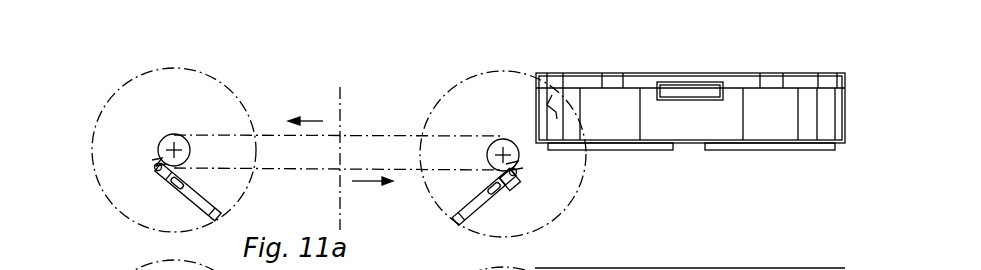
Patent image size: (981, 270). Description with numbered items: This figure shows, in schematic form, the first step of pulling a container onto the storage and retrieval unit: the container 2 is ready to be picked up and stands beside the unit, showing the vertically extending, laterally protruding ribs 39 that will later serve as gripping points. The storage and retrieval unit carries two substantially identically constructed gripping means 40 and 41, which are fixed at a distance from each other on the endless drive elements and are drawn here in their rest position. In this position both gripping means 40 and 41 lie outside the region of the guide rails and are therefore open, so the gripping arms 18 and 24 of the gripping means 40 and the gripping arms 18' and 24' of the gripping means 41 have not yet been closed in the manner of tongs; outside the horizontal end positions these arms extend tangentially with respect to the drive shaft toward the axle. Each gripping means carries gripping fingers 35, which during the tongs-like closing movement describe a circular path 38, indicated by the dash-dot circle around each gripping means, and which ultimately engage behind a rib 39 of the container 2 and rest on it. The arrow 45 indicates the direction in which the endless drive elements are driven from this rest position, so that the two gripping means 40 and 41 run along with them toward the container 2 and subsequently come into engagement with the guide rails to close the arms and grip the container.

The container 2 is at (770, 72).
The gripping arm 18 is at (456, 216).
The gripping arm 18' is at (154, 214).
The gripping arm 24 is at (446, 181).
The gripping arm 24' is at (232, 170).
The gripping finger 35 is at (617, 268).
The circular path 38 is at (470, 77).
The rib 39 is at (552, 95).
The gripping means 40 is at (522, 187).
The gripping means 41 is at (150, 180).
The arrow 45 is at (315, 120).